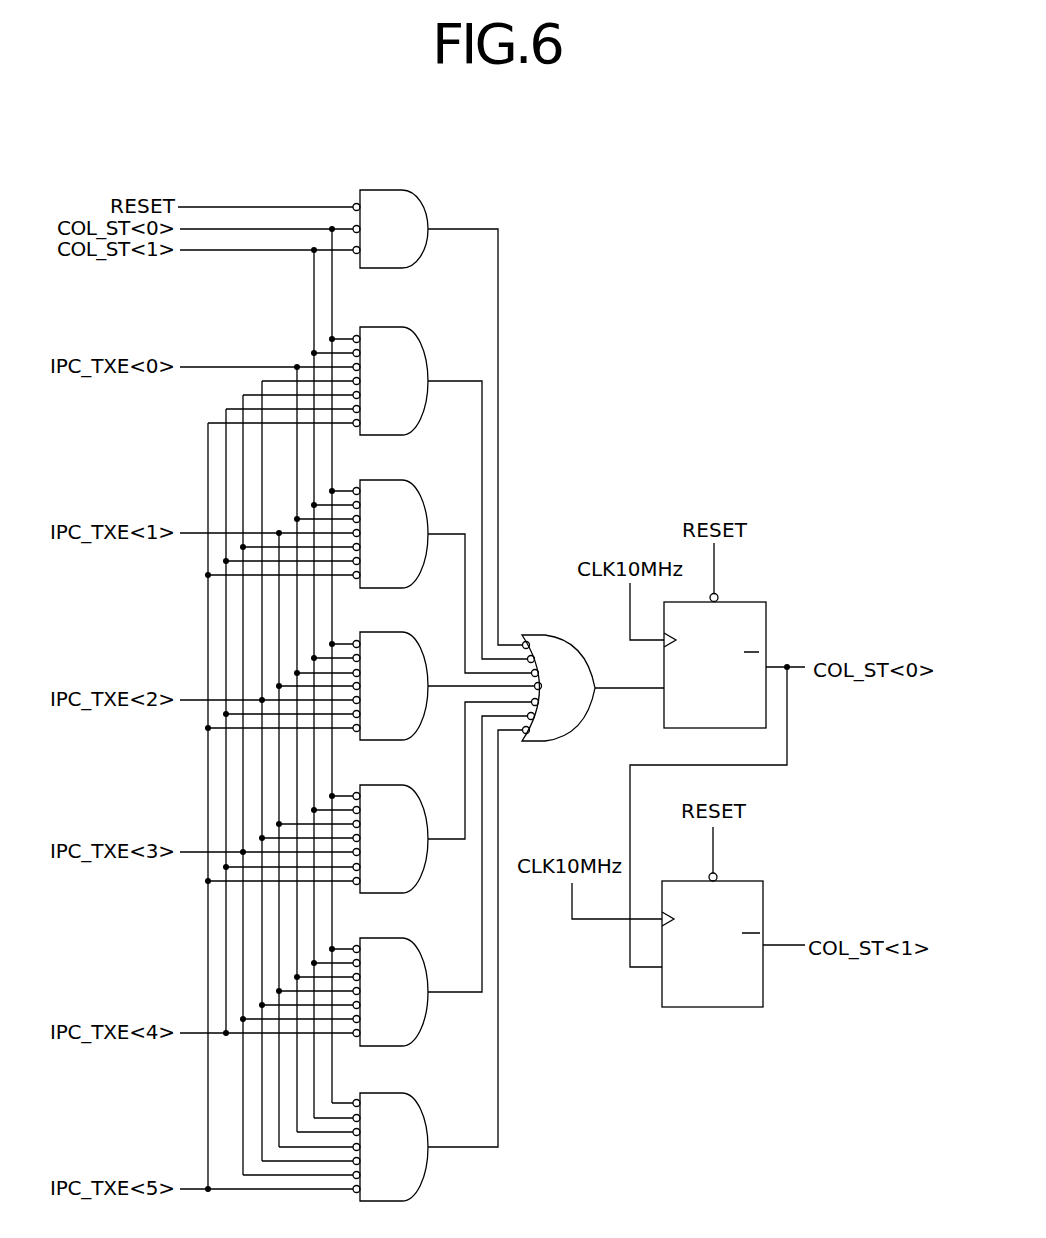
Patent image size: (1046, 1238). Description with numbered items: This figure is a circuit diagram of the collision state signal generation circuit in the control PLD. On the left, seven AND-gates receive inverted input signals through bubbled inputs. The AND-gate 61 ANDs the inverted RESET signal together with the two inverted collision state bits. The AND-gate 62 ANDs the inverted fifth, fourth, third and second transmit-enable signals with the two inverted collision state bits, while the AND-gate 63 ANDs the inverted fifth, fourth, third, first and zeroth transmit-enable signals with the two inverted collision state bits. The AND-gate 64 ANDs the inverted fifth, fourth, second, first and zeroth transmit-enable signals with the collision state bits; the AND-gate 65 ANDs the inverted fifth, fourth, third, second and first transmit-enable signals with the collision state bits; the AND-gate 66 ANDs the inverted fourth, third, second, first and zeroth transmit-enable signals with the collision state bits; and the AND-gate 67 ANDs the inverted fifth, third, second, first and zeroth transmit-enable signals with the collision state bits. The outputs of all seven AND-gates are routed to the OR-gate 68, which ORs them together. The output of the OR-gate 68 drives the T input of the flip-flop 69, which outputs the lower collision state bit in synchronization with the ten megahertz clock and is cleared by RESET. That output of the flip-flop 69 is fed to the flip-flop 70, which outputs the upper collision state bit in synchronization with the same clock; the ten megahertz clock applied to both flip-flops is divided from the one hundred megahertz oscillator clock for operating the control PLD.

The AND-gate 61 is at (422, 203).
The AND-gate 62 is at (424, 352).
The AND-gate 63 is at (424, 505).
The AND-gate 64 is at (424, 657).
The AND-gate 65 is at (424, 810).
The AND-gate 66 is at (424, 963).
The AND-gate 67 is at (424, 1118).
The OR-gate 68 is at (580, 653).
The flip-flop 69 is at (766, 627).
The flip-flop 70 is at (763, 905).